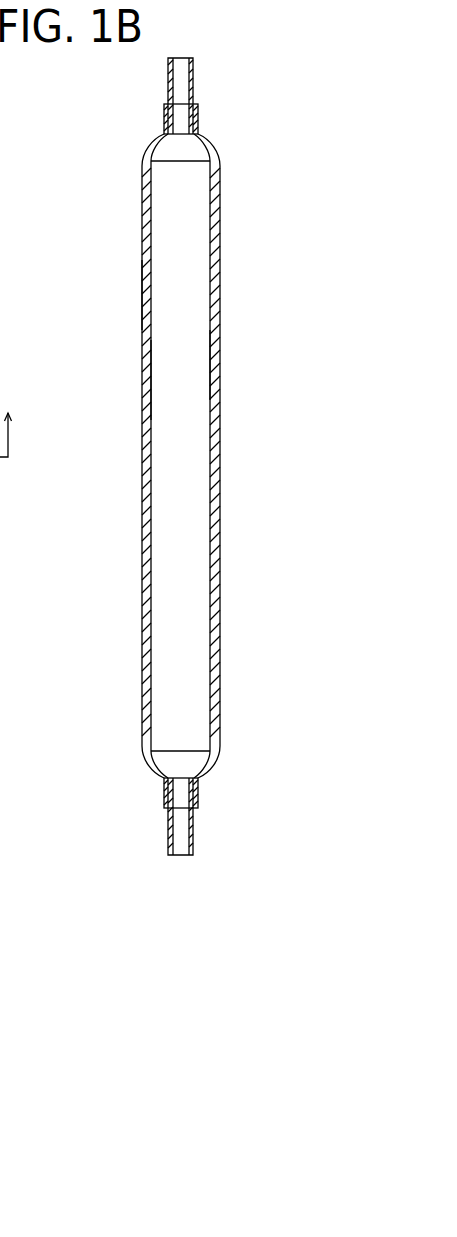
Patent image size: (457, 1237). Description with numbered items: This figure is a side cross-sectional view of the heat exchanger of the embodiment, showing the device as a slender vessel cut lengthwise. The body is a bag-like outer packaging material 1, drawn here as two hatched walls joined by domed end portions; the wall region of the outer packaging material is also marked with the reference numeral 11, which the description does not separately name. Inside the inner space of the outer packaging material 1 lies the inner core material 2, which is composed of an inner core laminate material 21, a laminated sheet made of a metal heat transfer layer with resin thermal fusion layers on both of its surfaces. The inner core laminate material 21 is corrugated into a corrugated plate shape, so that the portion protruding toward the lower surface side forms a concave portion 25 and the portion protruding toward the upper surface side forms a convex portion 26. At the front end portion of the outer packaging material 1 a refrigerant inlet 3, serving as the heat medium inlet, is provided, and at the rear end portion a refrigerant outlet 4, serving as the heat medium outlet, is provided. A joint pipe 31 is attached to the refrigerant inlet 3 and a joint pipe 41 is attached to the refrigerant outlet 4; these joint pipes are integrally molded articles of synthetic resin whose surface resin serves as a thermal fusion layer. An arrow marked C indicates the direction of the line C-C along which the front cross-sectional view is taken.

The outer packaging material 1 is at (0, 247).
The body portion 11 is at (143, 509).
The inner core material 2 is at (170, 387).
The inner core laminate material 21 is at (182, 547).
The concave portion 25 is at (217, 365).
The convex portion 26 is at (143, 296).
The refrigerant inlet 3 is at (198, 122).
The joint pipe 31 is at (181, 80).
The refrigerant outlet 4 is at (197, 793).
The joint pipe 41 is at (182, 832).
The line C- C is at (9, 413).